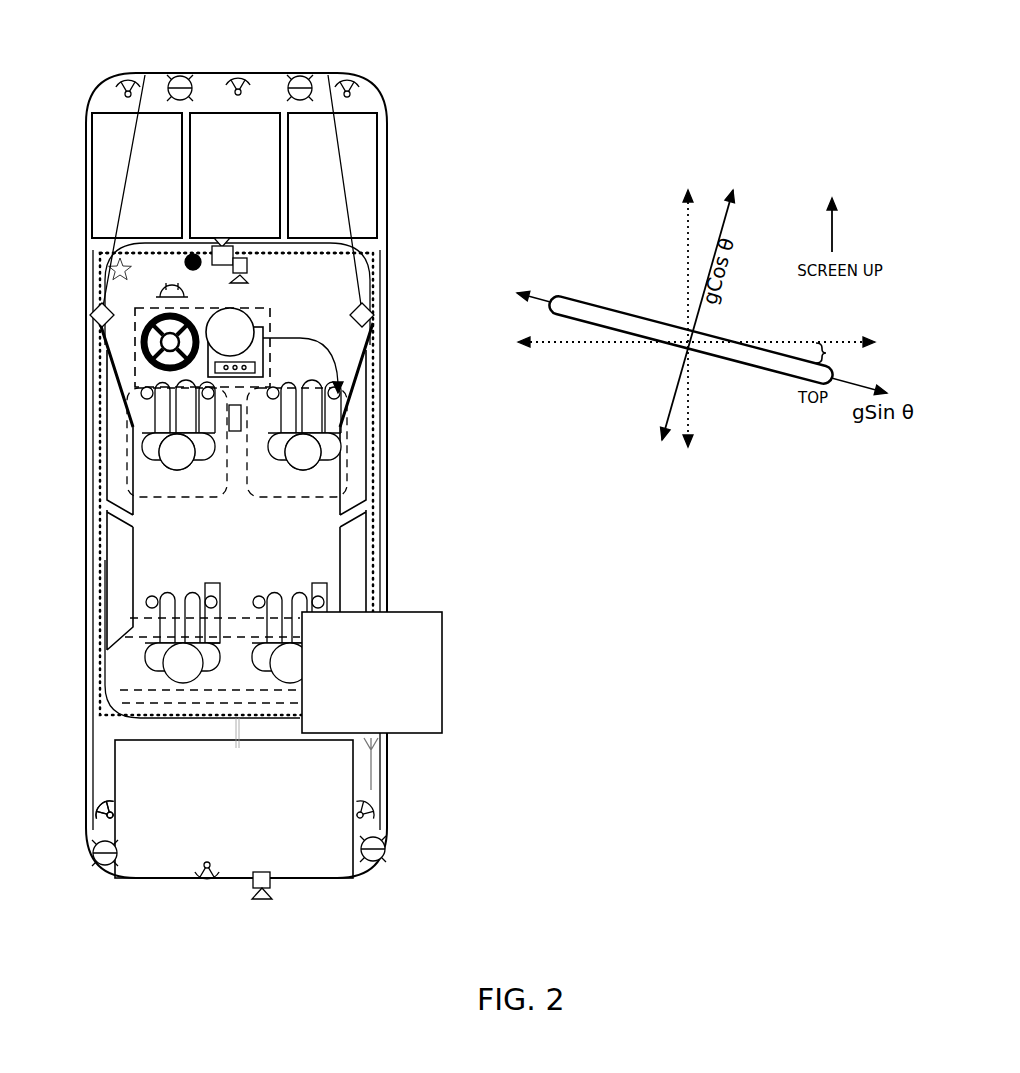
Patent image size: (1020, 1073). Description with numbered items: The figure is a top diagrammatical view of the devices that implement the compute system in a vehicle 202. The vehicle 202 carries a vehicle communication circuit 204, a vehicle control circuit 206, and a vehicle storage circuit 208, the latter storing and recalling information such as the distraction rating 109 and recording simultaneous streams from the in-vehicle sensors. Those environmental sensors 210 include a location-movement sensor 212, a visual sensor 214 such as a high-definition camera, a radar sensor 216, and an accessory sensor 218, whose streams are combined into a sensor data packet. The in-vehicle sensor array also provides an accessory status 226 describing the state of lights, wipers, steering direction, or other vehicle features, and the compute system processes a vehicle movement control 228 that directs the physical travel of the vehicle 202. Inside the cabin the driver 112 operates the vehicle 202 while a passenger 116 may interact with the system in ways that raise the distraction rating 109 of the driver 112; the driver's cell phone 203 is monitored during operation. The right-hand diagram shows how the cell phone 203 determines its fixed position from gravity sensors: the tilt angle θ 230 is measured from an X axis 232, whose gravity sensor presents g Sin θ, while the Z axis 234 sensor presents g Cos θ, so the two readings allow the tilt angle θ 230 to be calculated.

The vehicle 202 is at (87, 58).
The vehicle communication circuit 204 is at (313, 229).
The vehicle control circuit 206 is at (118, 229).
The vehicle storage circuit 208 is at (216, 229).
The environmental sensors 210 is at (78, 253).
The location-movement sensor 212 is at (214, 342).
The visual sensor 214 is at (247, 267).
The radar sensor 216 is at (112, 812).
The accessory sensor 218 is at (186, 261).
The accessory status 226 is at (265, 365).
The vehicle movement control 228 is at (164, 346).
The driver 112 is at (177, 464).
The passenger 116 is at (305, 464).
The cell phone 203 is at (232, 432).
The distraction rating 109 is at (354, 710).
The tilt angle θ 230 is at (852, 363).
The X axis 232 is at (598, 343).
The Z axis 234 is at (692, 382).